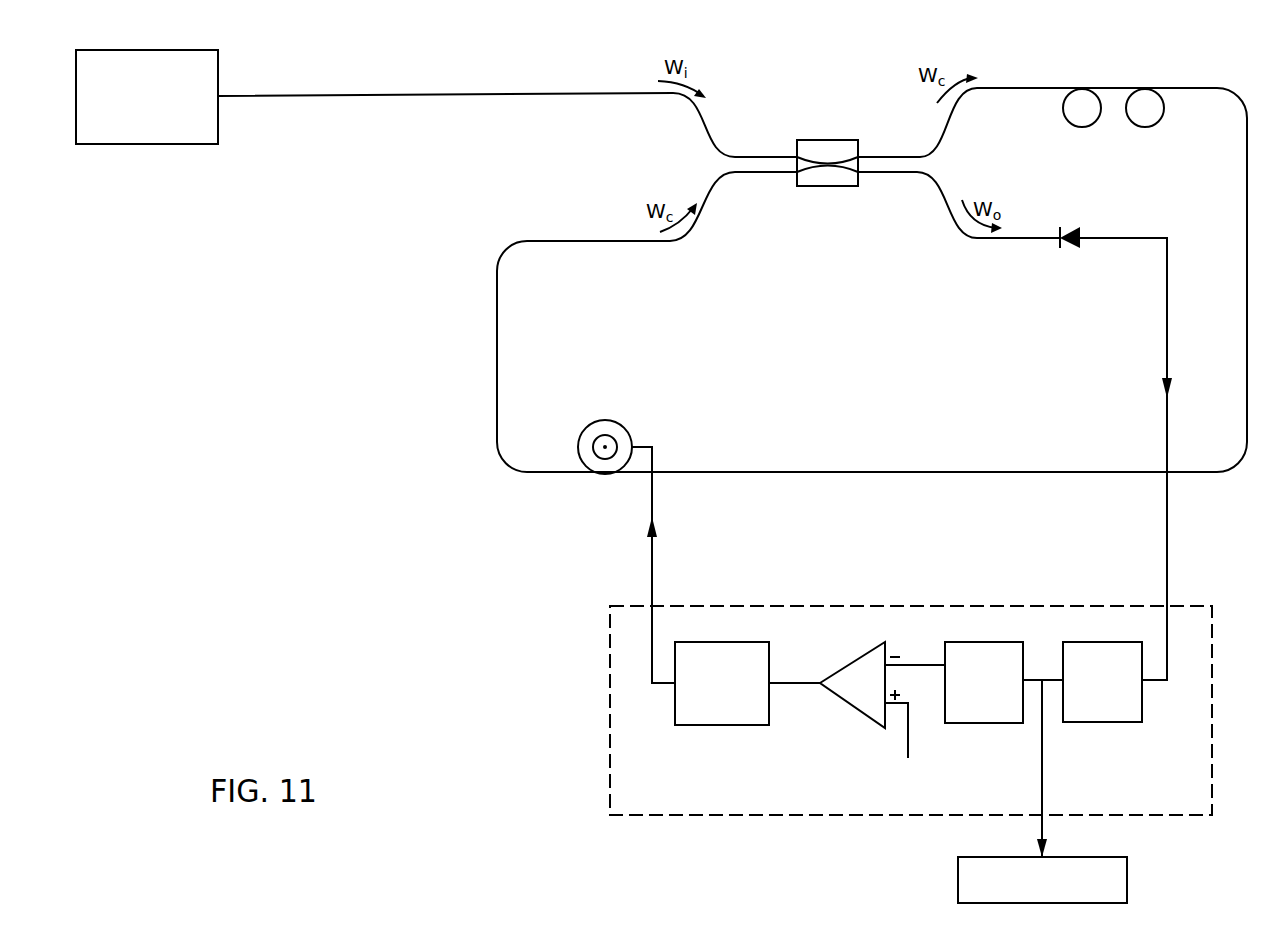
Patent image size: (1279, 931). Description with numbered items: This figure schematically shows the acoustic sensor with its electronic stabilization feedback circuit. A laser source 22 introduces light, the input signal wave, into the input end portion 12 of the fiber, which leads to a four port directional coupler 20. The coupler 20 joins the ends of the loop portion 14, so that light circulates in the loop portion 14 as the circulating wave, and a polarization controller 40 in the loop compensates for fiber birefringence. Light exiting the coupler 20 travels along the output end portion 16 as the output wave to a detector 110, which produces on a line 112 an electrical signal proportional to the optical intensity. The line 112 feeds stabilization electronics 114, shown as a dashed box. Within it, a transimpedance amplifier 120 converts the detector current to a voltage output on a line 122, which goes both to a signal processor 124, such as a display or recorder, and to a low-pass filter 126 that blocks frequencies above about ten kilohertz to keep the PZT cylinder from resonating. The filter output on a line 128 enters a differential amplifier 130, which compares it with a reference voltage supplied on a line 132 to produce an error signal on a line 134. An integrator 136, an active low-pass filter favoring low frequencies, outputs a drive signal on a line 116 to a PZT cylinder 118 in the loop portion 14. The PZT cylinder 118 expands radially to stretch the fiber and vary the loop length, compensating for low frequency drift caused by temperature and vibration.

The input end portion 12 is at (563, 93).
The loop portion 14 is at (955, 470).
The output end portion 16 is at (915, 175).
The directional coupler 20 is at (826, 140).
The laser source 22 is at (150, 50).
The polarization controller 40 is at (1115, 112).
The detector 110 is at (1067, 226).
The line 112 is at (1170, 437).
The stabilization electronics 114 is at (1212, 657).
The line 116 is at (652, 582).
The PZT cylinder 118 is at (622, 422).
The transimpedance amplifier 120 is at (1110, 722).
The line 122 is at (1032, 680).
The signal processor 124 is at (1127, 885).
The low-pass filter 126 is at (985, 642).
The line 128 is at (915, 664).
The differential amplifier 130 is at (845, 665).
The line 132 is at (910, 727).
The line 134 is at (795, 683).
The integrator 136 is at (708, 725).